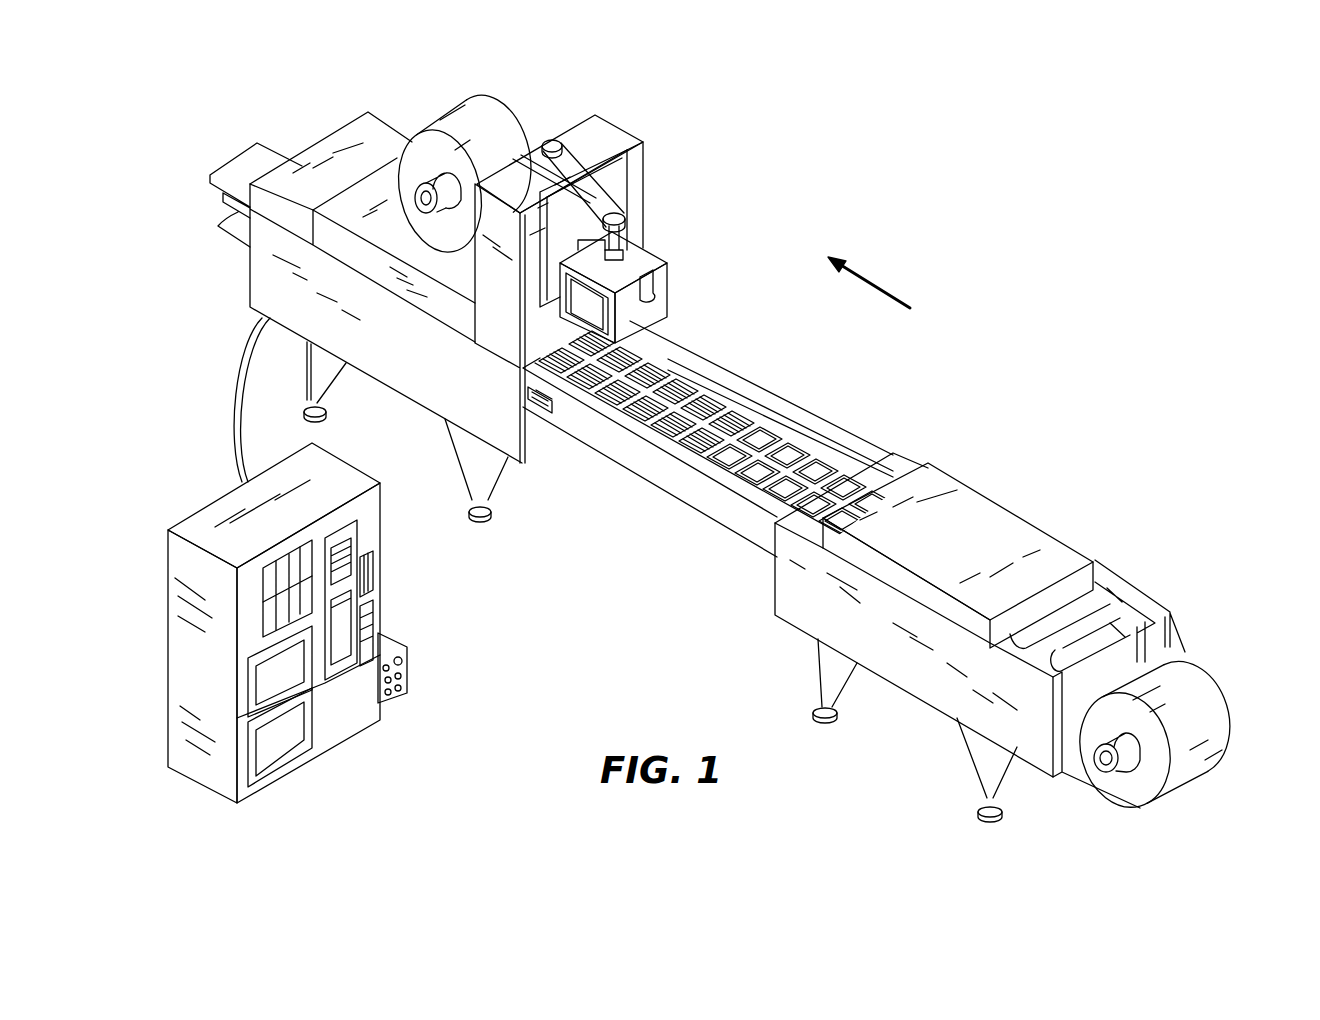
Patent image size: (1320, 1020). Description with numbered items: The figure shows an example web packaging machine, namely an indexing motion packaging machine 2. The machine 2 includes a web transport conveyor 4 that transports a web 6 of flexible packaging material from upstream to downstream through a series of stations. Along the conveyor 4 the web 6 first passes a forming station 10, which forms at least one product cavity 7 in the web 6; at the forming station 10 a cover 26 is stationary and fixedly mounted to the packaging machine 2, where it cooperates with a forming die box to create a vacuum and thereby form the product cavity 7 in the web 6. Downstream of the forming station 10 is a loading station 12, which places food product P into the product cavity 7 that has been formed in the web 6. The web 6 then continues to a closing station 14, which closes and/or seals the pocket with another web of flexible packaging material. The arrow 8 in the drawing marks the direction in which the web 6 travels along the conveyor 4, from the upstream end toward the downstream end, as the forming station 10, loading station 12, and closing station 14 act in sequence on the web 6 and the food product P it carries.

The indexing motion packaging machine 2 is at (1000, 265).
The web transport conveyor 4 is at (753, 400).
The web 6 is at (1077, 638).
The product cavity 7 is at (835, 482).
The direction of travel 8 is at (868, 280).
The forming station 10 is at (1032, 491).
The loading station 12 is at (662, 516).
The closing station 14 is at (539, 104).
The cover 26 is at (942, 485).
The food product P is at (715, 385).